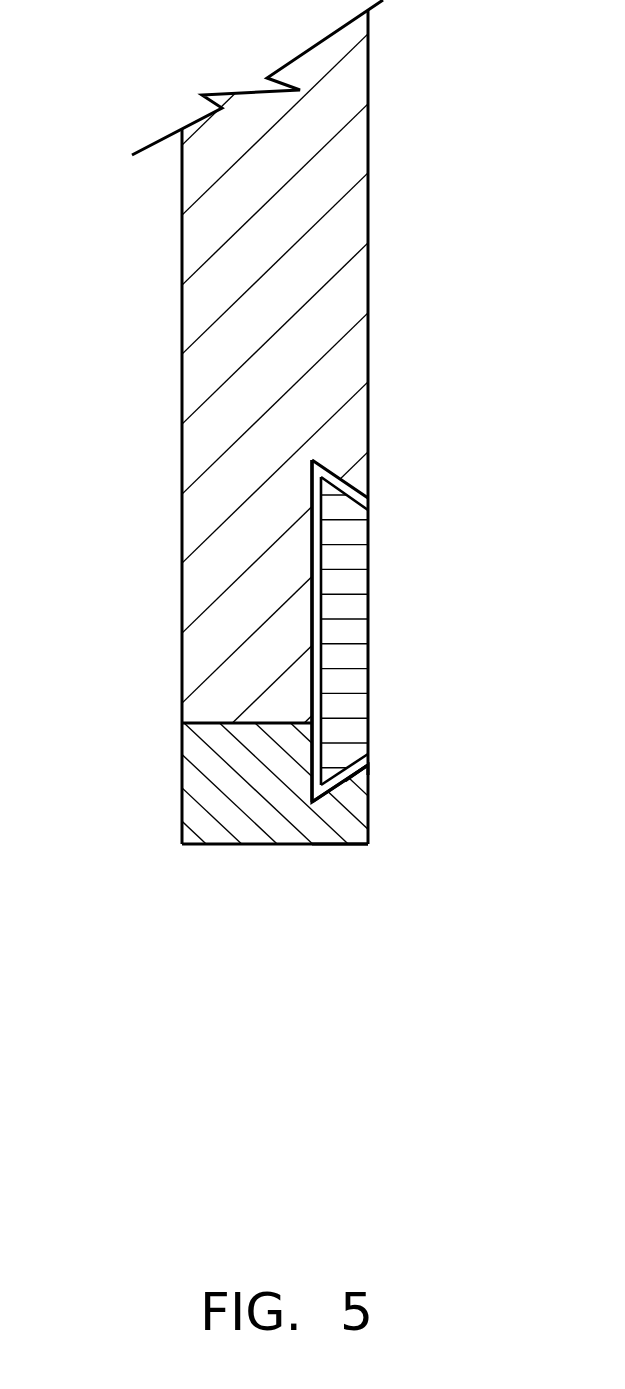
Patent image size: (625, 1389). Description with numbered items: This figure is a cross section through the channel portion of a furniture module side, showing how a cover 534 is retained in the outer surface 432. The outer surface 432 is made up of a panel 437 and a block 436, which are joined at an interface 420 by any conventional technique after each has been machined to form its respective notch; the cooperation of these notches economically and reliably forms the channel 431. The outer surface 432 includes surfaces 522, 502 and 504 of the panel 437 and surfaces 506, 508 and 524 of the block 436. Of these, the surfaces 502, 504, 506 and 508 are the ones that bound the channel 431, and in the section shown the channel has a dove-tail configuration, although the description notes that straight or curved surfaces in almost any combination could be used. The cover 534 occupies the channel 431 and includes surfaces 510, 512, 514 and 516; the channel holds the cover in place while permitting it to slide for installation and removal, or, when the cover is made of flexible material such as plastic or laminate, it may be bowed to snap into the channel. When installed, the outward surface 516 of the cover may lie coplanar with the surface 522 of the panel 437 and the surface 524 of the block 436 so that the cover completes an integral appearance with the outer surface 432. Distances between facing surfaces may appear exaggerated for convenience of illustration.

The channel 431 is at (393, 920).
The outer surface 432 is at (368, 135).
The surface of panel 522 is at (368, 348).
The panel 437 is at (182, 583).
The interface 420 is at (182, 723).
The block 436 is at (182, 775).
The surface of panel 502 is at (338, 477).
The surface of cover 510 is at (349, 500).
The cover 534 is at (368, 587).
The surface of cover 512 is at (322, 605).
The surface of panel 504 is at (313, 640).
The surface of cover 516 is at (368, 700).
The surface of block 506 is at (322, 769).
The surface of cover 514 is at (368, 765).
The surface of block 508 is at (343, 781).
The surface of block 524 is at (368, 832).